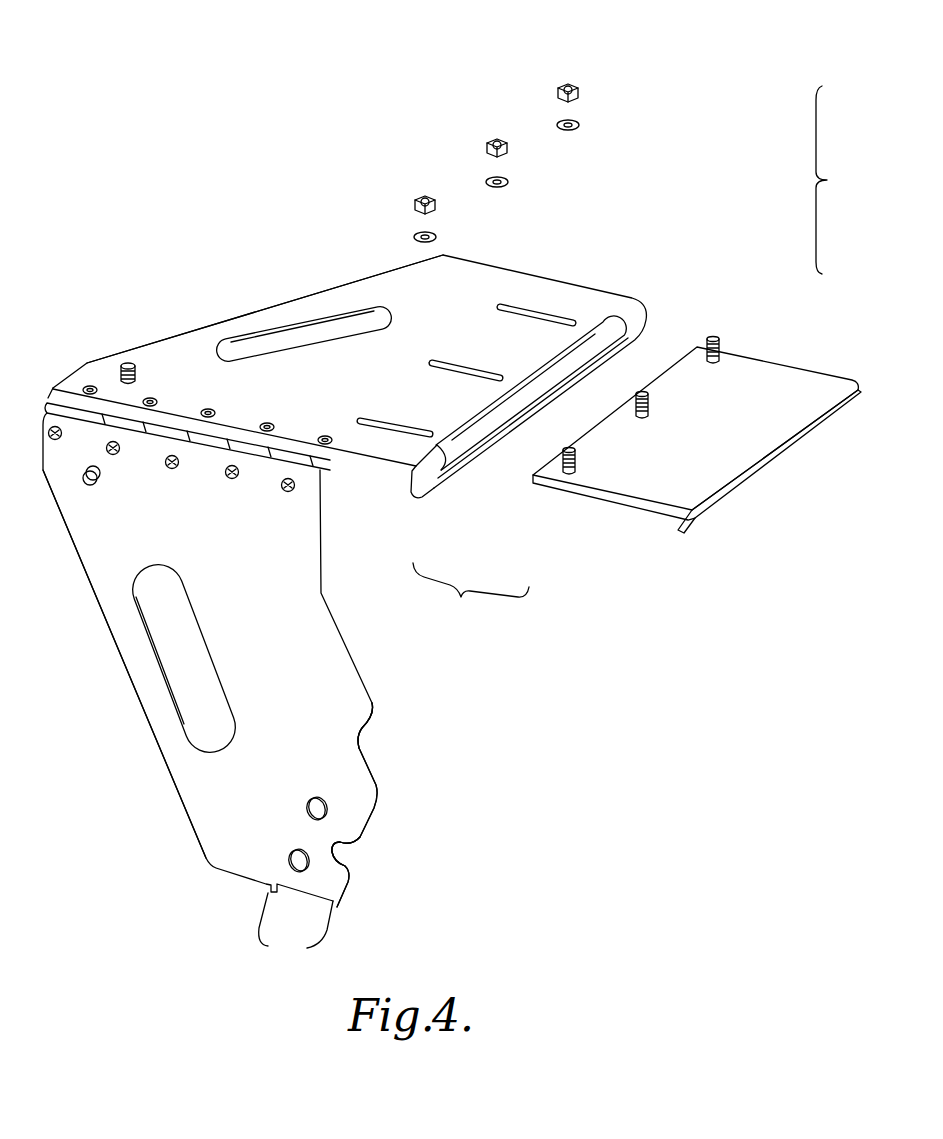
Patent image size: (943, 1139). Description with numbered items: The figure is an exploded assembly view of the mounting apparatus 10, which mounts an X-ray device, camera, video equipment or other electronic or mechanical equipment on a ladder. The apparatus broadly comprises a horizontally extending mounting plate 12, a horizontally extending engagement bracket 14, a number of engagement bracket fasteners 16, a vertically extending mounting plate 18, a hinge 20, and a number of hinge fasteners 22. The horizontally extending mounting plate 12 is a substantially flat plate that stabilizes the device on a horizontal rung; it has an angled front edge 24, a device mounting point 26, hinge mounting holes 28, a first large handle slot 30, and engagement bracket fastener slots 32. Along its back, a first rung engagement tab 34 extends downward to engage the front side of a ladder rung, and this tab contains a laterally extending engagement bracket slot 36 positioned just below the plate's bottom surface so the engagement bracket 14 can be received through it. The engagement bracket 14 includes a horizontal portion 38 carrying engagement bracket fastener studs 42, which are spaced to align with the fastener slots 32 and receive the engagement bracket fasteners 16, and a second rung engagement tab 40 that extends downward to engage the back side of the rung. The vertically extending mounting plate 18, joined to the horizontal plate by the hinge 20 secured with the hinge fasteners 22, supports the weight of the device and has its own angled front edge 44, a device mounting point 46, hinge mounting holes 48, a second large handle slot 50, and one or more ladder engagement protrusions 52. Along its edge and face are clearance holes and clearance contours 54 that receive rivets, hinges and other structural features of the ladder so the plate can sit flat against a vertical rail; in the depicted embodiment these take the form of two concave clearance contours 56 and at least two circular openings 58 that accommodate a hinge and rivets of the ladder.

The mounting apparatus 10 is at (205, 130).
The horizontally extending mounting plate 12 is at (342, 246).
The horizontally extending engagement bracket 14 is at (746, 321).
The engagement bracket fasteners 16 is at (550, 81).
The vertically extending mounting plate 18 is at (98, 641).
The hinge 20 is at (335, 482).
The hinge fasteners 22 is at (208, 409).
The angled front edge 24 is at (218, 323).
The device mounting point 26 is at (127, 362).
The hinge mounting holes 28 is at (325, 436).
The first large handle slot 30 is at (287, 323).
The engagement bracket fastener slots 32 is at (527, 318).
The first rung engagement tab 34 is at (418, 500).
The engagement bracket slot 36 is at (482, 446).
The horizontal portion 38 is at (778, 397).
The second rung engagement tab 40 is at (687, 527).
The engagement bracket fastener studs 42 is at (645, 420).
The angled front edge 44 is at (168, 773).
The device mounting point 46 is at (90, 490).
The hinge mounting holes 48 is at (288, 492).
The second large handle slot 50 is at (182, 659).
The ladder engagement protrusions 52 is at (296, 924).
The clearance holes and clearance contours 54 is at (442, 797).
The concave clearance contours 56 is at (367, 747).
The circular openings 58 is at (292, 850).